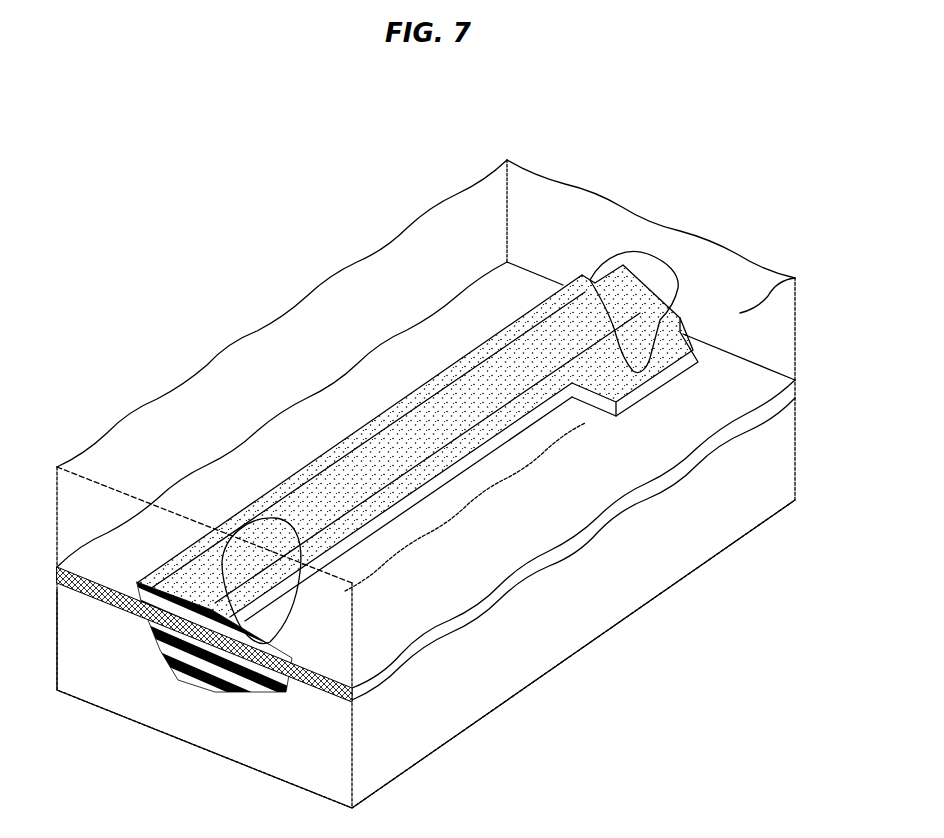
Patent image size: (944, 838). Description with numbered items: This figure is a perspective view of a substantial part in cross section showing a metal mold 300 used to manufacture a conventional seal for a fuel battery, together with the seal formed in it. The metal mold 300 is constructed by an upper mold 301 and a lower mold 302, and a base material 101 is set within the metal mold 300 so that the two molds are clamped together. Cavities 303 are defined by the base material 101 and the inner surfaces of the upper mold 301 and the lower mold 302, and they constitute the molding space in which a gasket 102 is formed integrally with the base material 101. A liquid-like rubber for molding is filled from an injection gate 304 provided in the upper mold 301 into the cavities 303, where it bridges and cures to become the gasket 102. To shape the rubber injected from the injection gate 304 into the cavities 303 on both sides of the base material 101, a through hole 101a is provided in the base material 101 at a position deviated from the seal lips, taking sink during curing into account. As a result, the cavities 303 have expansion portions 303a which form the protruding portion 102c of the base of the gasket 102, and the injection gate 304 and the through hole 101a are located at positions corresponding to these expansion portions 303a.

The metal mold 300 is at (250, 325).
The upper mold 301 is at (360, 288).
The lower mold 302 is at (452, 712).
The base material 101 is at (545, 505).
The through hole 101a is at (233, 663).
The gasket 102 is at (393, 430).
The cavity 303 is at (399, 534).
The protruding portion 102c is at (300, 606).
The expansion portion 303a is at (401, 504).
The injection gate 304 is at (648, 266).